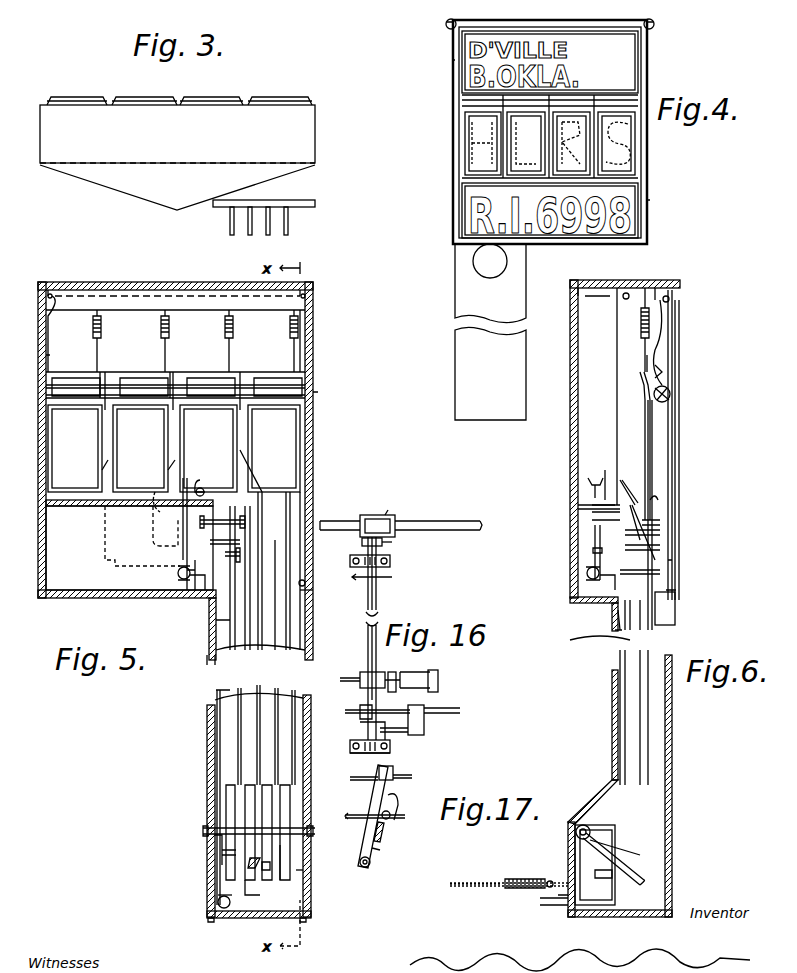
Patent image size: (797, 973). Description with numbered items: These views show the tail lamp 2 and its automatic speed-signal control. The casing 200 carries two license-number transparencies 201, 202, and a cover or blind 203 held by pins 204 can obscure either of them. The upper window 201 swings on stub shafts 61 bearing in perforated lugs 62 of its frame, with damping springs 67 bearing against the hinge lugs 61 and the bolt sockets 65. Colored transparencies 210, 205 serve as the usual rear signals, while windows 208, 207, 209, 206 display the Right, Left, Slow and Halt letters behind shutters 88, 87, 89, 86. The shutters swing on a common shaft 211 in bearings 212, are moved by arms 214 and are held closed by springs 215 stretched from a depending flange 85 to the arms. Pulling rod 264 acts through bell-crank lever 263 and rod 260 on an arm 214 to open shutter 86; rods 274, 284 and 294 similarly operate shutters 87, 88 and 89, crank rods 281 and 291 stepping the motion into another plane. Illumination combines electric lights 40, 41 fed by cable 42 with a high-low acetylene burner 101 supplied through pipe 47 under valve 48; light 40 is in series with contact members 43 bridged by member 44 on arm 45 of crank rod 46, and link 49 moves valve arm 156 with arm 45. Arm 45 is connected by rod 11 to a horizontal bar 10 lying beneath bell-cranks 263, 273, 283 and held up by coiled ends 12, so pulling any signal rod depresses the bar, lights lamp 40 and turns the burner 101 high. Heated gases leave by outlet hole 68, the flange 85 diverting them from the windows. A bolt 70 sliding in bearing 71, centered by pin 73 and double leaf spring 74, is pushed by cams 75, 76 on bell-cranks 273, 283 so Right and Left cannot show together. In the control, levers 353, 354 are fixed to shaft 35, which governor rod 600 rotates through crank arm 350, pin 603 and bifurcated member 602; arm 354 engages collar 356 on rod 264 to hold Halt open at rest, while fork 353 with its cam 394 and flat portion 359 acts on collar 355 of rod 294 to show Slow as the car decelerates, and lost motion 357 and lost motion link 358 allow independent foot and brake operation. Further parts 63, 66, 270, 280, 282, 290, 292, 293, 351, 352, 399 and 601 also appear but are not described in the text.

In FIG. 3, the tail lamp 2 is at (305, 145).
In FIG. 4, the tail lamp 2 is at (640, 153).
In FIG. 5, the horizontal bar 10 is at (226, 800).
In FIG. 6, the horizontal bar 10 is at (590, 832).
In FIG. 5, the link or rod 11 is at (250, 545).
In FIG. 6, the link or rod 11 is at (675, 608).
In FIG. 16, the link or rod 11 is at (366, 735).
In FIG. 5, the coiled ends 12 is at (210, 830).
In FIG. 6, the coiled ends 12 is at (640, 855).
In FIG. 16, the shaft 35 is at (378, 592).
In FIG. 17, the shaft 35 is at (370, 864).
In FIG. 5, the electric light 40 is at (150, 530).
In FIG. 6, the electric light 40 is at (645, 505).
In FIG. 5, the electric light 41 is at (155, 490).
In FIG. 5, the cable 42 is at (190, 568).
In FIG. 6, the cable 42 is at (593, 552).
In FIG. 6, the contact members 43 is at (660, 523).
In FIG. 6, the bridging member 44 is at (624, 480).
In FIG. 5, the arm 45 is at (224, 514).
In FIG. 6, the arm 45 is at (590, 516).
In FIG. 5, the crank rod 46 is at (213, 484).
In FIG. 5, the pipe 47 is at (205, 628).
In FIG. 6, the pipe 47 is at (612, 628).
In FIG. 5, the valve 48 is at (177, 576).
In FIG. 6, the valve 48 is at (586, 575).
In FIG. 5, the link 49 is at (200, 478).
In FIG. 6, the link 49 is at (660, 495).
In FIG. 5, the stub shafts 61 is at (48, 288).
In FIG. 6, the stub shafts 61 is at (669, 296).
In FIG. 5, the perforated lugs 62 is at (50, 293).
In FIG. 5, the pin 63 is at (305, 583).
In FIG. 6, the pin 63 is at (660, 288).
In FIG. 6, the sockets 65 is at (658, 370).
In FIG. 5, the stop 66 is at (50, 355).
In FIG. 6, the stop 66 is at (643, 365).
In FIG. 5, the damping springs 67 is at (60, 330).
In FIG. 6, the damping springs 67 is at (662, 320).
In FIG. 6, the outlet hole 68 is at (600, 292).
In FIG. 5, the bolt 70 is at (220, 900).
In FIG. 6, the bolt 70 is at (570, 855).
In FIG. 5, the bearing 71 is at (225, 852).
In FIG. 6, the bearing 71 is at (550, 870).
In FIG. 5, the pin 73 is at (250, 893).
In FIG. 6, the pin 73 is at (605, 887).
In FIG. 6, the double leaf spring 74 is at (540, 903).
In FIG. 5, the cam 75 is at (300, 872).
In FIG. 5, the cam 76 is at (222, 845).
In FIG. 5, the depending flange 85 is at (177, 294).
In FIG. 6, the depending flange 85 is at (608, 300).
In FIG. 3, the shutter 86 is at (278, 96).
In FIG. 4, the shutter 86 is at (480, 155).
In FIG. 6, the shutter 86 is at (680, 428).
In FIG. 3, the shutter 87 is at (222, 90).
In FIG. 4, the shutter 87 is at (470, 106).
In FIG. 3, the shutter 88 is at (155, 90).
In FIG. 4, the shutter 88 is at (580, 108).
In FIG. 3, the shutter 89 is at (86, 90).
In FIG. 4, the shutter 89 is at (625, 135).
In FIG. 6, the high-low acetylene burner 101 is at (588, 488).
In FIG. 5, the valve arm 156 is at (202, 502).
In FIG. 6, the valve arm 156 is at (598, 476).
In FIG. 5, the casing 200 is at (150, 282).
In FIG. 6, the casing 200 is at (610, 280).
In FIG. 4, the transparency 201 is at (628, 68).
In FIG. 5, the transparency 201 is at (303, 352).
In FIG. 6, the transparency 201 is at (674, 340).
In FIG. 4, the transparency 202 is at (632, 210).
In FIG. 6, the transparency 202 is at (672, 570).
In FIG. 4, the cover or blind 203 is at (652, 22).
In FIG. 5, the cover or blind 203 is at (129, 545).
In FIG. 4, the pins 204 is at (455, 62).
In FIG. 4, the colored transparency 205 is at (486, 275).
In FIG. 5, the window 206 is at (274, 448).
In FIG. 5, the window 207 is at (208, 448).
In FIG. 5, the window 208 is at (140, 448).
In FIG. 5, the window 209 is at (75, 448).
In FIG. 4, the colored transparency 210 is at (455, 268).
In FIG. 5, the colored transparency 210 is at (318, 580).
In FIG. 5, the common shaft 211 is at (172, 375).
In FIG. 6, the common shaft 211 is at (668, 392).
In FIG. 5, the bearings 212 is at (68, 382).
In FIG. 5, the arms 214 is at (100, 378).
In FIG. 6, the arms 214 is at (645, 380).
In FIG. 5, the springs 215 is at (101, 322).
In FIG. 6, the springs 215 is at (640, 325).
In FIG. 5, the rod 260 is at (290, 470).
In FIG. 6, the rod 260 is at (652, 412).
In FIG. 5, the bell-crank lever 263 is at (272, 866).
In FIG. 6, the bell-crank lever 263 is at (640, 868).
In FIG. 3, the rod 264 is at (288, 220).
In FIG. 6, the rod 264 is at (475, 870).
In FIG. 16, the rod 264 is at (430, 675).
In FIG. 17, the rod 264 is at (412, 777).
In FIG. 5, the rod 270 is at (240, 680).
In FIG. 5, the bell-crank 273 is at (283, 880).
In FIG. 3, the rod 274 is at (270, 228).
In FIG. 5, the window frame 280 is at (150, 469).
In FIG. 5, the crank rod 281 is at (227, 546).
In FIG. 6, the crank rod 281 is at (660, 540).
In FIG. 5, the rod 282 is at (235, 690).
In FIG. 5, the bell-crank lever 283 is at (235, 918).
In FIG. 3, the rod 284 is at (248, 228).
In FIG. 5, the window frame 290 is at (84, 469).
In FIG. 6, the crank rod 291 is at (660, 572).
In FIG. 5, the wall 292 is at (214, 612).
In FIG. 5, the wedge 293 is at (248, 865).
In FIG. 3, the rod 294 is at (228, 220).
In FIG. 16, the rod 294 is at (458, 710).
In FIG. 17, the rod 294 is at (405, 817).
In FIG. 16, the crank arm 350 is at (392, 542).
In FIG. 16, the block 351 is at (390, 561).
In FIG. 16, the plate 352 is at (362, 758).
In FIG. 16, the lever 353 is at (390, 748).
In FIG. 17, the lever 353 is at (380, 850).
In FIG. 16, the lever 354 is at (360, 680).
In FIG. 17, the lever 354 is at (408, 802).
In FIG. 16, the collar 355 is at (358, 711).
In FIG. 17, the collar 355 is at (368, 800).
In FIG. 16, the collar 356 is at (395, 688).
In FIG. 17, the collar 356 is at (393, 770).
In FIG. 16, the lost motion 357 is at (424, 722).
In FIG. 16, the lost motion link 358 is at (433, 692).
In FIG. 17, the flat portion of cam 359 is at (384, 830).
In FIG. 16, the cam 394 is at (353, 738).
In FIG. 17, the pin 399 is at (405, 808).
In FIG. 16, the governor rod 600 is at (350, 508).
In FIG. 16, the bar 601 is at (450, 520).
In FIG. 16, the bifurcated member 602 is at (380, 515).
In FIG. 16, the pin 603 is at (388, 510).